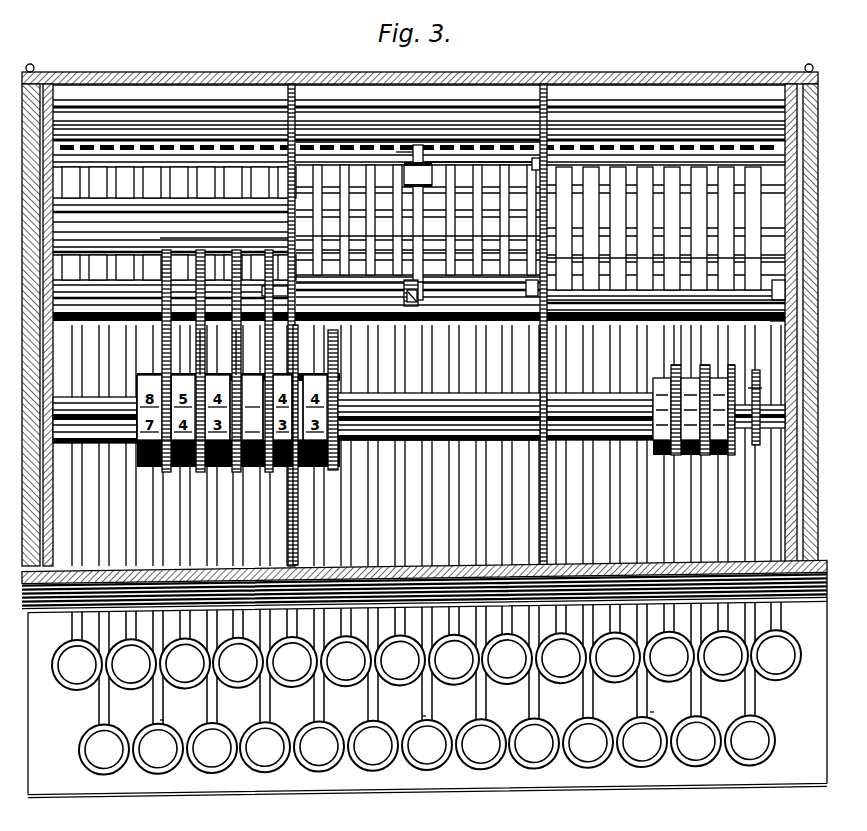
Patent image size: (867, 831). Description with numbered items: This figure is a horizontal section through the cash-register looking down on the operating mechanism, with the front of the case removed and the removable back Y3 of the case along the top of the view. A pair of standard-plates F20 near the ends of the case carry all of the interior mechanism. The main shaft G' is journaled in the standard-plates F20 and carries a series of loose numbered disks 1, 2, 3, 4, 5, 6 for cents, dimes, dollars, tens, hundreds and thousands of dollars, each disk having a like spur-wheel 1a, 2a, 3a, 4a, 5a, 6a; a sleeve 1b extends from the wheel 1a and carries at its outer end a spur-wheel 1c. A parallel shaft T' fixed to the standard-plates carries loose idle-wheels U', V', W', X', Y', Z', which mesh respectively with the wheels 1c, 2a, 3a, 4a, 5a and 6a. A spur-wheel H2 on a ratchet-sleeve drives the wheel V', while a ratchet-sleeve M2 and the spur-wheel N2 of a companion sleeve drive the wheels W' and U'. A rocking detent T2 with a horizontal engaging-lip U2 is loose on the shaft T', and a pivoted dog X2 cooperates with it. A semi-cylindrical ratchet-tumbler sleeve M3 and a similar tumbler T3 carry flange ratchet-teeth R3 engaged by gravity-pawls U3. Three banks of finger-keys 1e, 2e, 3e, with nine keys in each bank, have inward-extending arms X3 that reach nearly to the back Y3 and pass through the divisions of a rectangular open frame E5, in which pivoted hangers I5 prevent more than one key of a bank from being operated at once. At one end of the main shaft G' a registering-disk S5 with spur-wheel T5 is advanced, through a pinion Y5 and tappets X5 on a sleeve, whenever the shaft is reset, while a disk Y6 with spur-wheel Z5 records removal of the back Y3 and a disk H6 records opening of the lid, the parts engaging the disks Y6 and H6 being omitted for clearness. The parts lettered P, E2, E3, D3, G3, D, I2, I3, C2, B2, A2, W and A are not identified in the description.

The standard-plate F20 is at (50, 99).
The rectangular open frame E5 is at (182, 150).
The back of the case Y3 is at (420, 80).
The spur-wheel H2 is at (300, 166).
The gravity-pawl U3 is at (412, 152).
The pin P is at (418, 145).
The ratchet-tumbler sleeve M3 is at (456, 162).
The spur-wheel N2 is at (538, 160).
The ratchet-sleeve M2 is at (170, 236).
The bar E2 is at (275, 238).
The ratchet-teeth R3 is at (418, 227).
The bar E3 is at (343, 282).
The shaft end D3 is at (275, 289).
The gear G3 is at (424, 292).
The shaft D is at (517, 288).
The bar I2 is at (666, 237).
The rod I3 is at (660, 259).
The pivoted dog X2 is at (780, 262).
The engaging-lip U2 is at (650, 300).
The spur-wheel Z' is at (109, 383).
The pawl C2 is at (172, 362).
The spur-wheel Y' is at (209, 349).
The pawl B2 is at (210, 362).
The spur-wheel X' is at (244, 349).
The pawl A2 is at (238, 362).
The rack W is at (277, 361).
The spur-wheel V' is at (314, 445).
The spur-wheel U' is at (525, 345).
The spur-wheel 3a is at (264, 493).
The sleeve 1b is at (446, 415).
The spur-wheel 1c is at (526, 415).
The inward-extending arm X3 is at (446, 493).
The rocking detent T2 is at (600, 383).
The shaft T' is at (675, 345).
The hanger I5 is at (672, 370).
The spur-wheel Z5 is at (700, 372).
The pinion Y5 is at (740, 370).
The ratchet-sleeve tumbler T3 is at (770, 322).
The tappet X5 is at (753, 388).
The spur-wheel W' is at (760, 415).
The numbered disk H6 is at (658, 450).
The disk Y6 is at (685, 455).
The registering-disk S5 is at (710, 455).
The spur-wheel T5 is at (738, 455).
The main shaft G' is at (760, 418).
The disk 6 is at (153, 468).
The spur-wheel 6a is at (165, 470).
The disk 5 is at (180, 470).
The spur-wheel 5a is at (210, 470).
The disk 4 is at (230, 470).
The spur-wheel 4a is at (240, 470).
The disk 3 is at (258, 470).
The disk 2 is at (285, 470).
The spur-wheel 2a is at (296, 470).
The disk 1 is at (313, 470).
The spur-wheel 1a is at (337, 470).
The bank of finger-keys 3e is at (174, 706).
The bank of finger-keys 2e is at (435, 701).
The bank of finger-keys 1e is at (663, 699).
The keyboard casing A is at (424, 688).